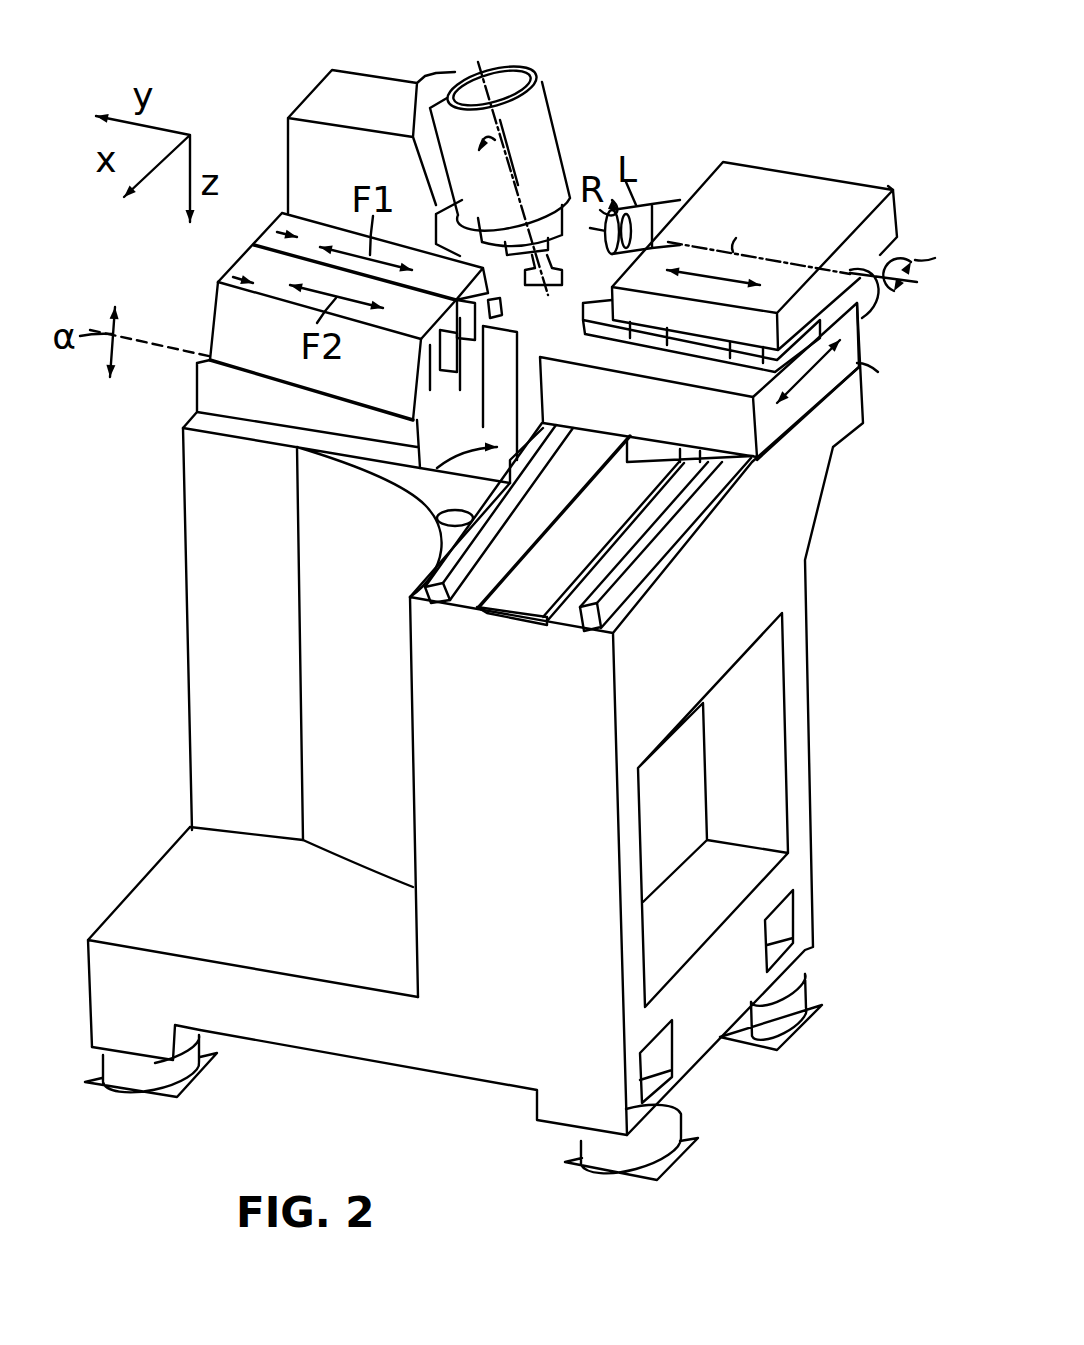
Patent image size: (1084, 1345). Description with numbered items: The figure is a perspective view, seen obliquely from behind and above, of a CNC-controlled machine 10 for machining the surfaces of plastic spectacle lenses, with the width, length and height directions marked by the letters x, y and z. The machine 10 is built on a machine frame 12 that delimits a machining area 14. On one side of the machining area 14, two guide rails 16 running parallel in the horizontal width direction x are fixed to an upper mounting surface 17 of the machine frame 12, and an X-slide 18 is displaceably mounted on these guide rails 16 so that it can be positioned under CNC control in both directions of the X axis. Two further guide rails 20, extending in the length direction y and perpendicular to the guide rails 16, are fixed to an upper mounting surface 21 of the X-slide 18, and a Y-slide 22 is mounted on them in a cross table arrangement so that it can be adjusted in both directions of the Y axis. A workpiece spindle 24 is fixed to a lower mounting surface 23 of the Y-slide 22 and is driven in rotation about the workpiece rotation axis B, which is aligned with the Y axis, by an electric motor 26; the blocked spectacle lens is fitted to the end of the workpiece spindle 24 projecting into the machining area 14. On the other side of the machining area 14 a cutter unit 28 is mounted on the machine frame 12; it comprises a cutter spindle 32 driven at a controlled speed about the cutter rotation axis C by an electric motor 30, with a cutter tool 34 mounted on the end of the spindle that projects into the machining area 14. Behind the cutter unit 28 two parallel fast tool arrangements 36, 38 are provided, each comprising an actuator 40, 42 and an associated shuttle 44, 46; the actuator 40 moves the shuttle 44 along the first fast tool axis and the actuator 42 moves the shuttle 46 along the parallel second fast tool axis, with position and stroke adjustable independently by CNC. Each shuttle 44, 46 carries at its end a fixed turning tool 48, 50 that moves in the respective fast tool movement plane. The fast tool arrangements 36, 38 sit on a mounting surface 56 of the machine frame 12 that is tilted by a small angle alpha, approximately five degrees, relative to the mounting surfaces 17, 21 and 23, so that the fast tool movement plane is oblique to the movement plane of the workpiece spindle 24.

The machine 10 is at (318, 1070).
The machine frame 12 is at (489, 806).
The machining area 14 is at (422, 490).
The guide rails 16 is at (593, 603).
The upper mounting surface 17 is at (630, 543).
The X-slide 18 is at (631, 429).
The guide rails 20 is at (858, 336).
The upper mounting surface 21 is at (728, 377).
The Y-slide 22 is at (795, 249).
The lower mounting surface 23 is at (893, 192).
The workpiece spindle 24 is at (657, 212).
The electric motor 26 is at (903, 245).
The cutter unit 28 is at (365, 100).
The electric motor 30 is at (513, 78).
The cutter spindle 32 is at (550, 200).
The cutter tool 34 is at (548, 272).
The first fast tool arrangement 36 is at (262, 228).
The second fast tool arrangement 38 is at (230, 277).
The actuator 40 is at (277, 232).
The actuator 42 is at (225, 328).
The shuttle 44 is at (470, 290).
The shuttle 46 is at (440, 320).
The turning tool 48 is at (500, 320).
The turning tool 50 is at (457, 380).
The mounting surface 56 is at (197, 362).